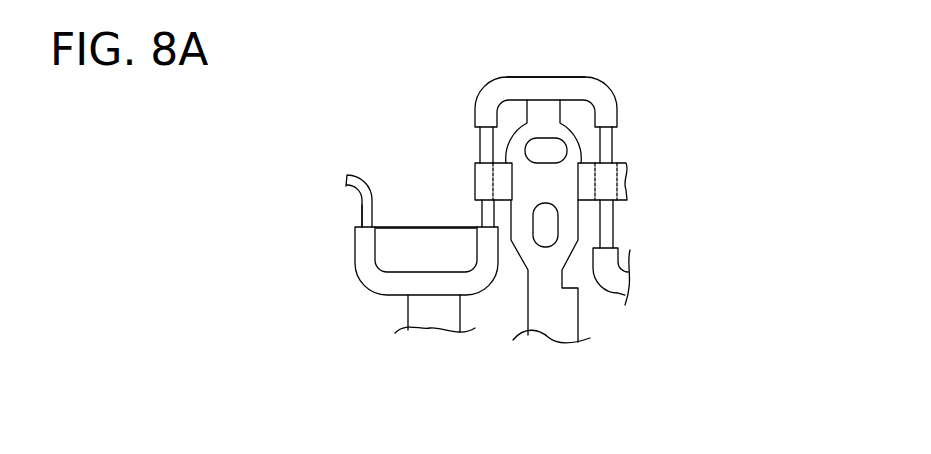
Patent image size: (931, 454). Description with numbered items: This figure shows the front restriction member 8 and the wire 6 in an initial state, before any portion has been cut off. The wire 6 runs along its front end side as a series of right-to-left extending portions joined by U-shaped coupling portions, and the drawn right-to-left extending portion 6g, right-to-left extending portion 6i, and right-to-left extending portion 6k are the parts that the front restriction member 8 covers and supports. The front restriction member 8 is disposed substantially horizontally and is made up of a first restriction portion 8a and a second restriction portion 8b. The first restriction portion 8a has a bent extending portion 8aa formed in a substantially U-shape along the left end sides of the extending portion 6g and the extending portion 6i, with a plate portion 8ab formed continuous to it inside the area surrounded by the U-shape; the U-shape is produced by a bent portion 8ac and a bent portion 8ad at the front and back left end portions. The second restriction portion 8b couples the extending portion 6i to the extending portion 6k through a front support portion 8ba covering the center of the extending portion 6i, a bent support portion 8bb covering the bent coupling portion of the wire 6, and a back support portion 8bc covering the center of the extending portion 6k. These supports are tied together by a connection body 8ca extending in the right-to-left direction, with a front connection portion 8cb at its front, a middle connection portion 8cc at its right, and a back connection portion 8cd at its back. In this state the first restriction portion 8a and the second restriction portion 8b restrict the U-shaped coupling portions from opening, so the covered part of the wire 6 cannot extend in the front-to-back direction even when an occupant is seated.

The front restriction member 8 is at (700, 60).
The first restriction portion 8a is at (330, 303).
The bent extending portion 8aa is at (363, 257).
The plate portion 8ab is at (410, 243).
The bent portion 8ac is at (378, 284).
The bent portion 8ad is at (477, 280).
The second restriction portion 8b is at (608, 77).
The front support portion 8ba is at (482, 178).
The bent support portion 8bb is at (558, 85).
The back support portion 8bc is at (607, 182).
The connection body 8ca is at (577, 142).
The front connection portion 8cb is at (505, 158).
The middle connection portion 8cc is at (537, 107).
The back connection portion 8cd is at (582, 203).
The wire 6 is at (363, 180).
The right-to-left extending portion 6g is at (362, 208).
The right-to-left extending portion 6i is at (485, 215).
The right-to-left extending portion 6k is at (615, 233).